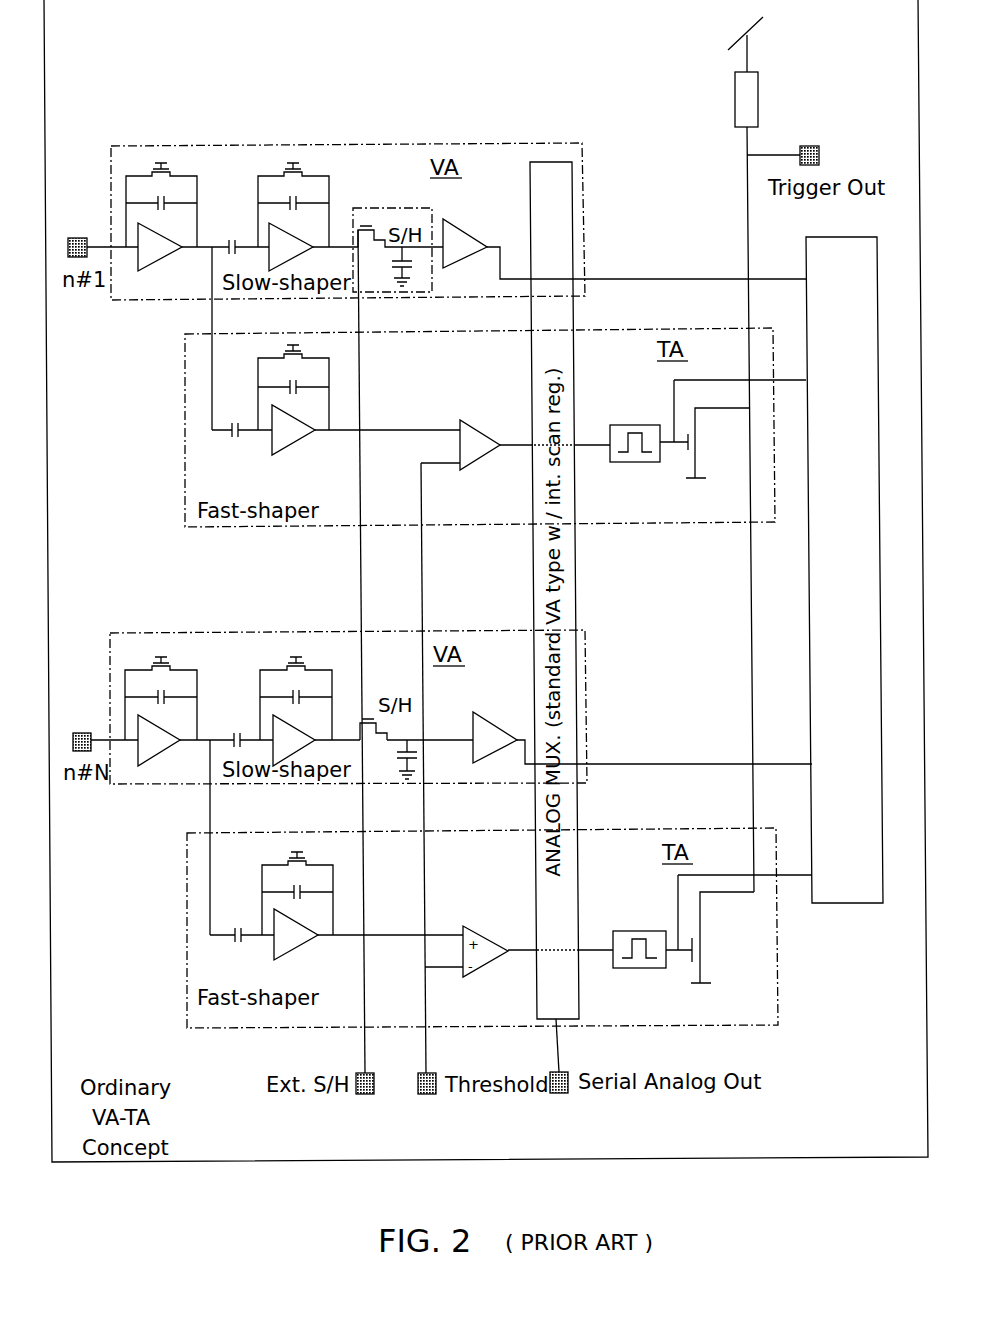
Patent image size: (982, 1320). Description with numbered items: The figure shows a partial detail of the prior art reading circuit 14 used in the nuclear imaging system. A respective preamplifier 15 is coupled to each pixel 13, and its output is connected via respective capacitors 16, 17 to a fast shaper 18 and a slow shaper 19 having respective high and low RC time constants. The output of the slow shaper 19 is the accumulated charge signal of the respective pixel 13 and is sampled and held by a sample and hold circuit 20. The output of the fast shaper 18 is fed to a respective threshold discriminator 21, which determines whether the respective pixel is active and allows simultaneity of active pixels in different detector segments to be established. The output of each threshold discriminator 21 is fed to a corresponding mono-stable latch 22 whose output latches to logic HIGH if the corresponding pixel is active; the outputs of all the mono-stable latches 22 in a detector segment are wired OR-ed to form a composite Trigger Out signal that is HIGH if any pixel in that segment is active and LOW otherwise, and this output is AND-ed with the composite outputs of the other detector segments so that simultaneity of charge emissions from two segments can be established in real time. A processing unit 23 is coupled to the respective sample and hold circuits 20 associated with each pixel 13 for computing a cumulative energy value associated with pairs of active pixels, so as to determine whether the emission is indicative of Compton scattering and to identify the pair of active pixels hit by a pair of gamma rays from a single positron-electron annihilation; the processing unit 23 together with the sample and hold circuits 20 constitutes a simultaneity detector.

The pixel 13 is at (76, 238).
The reading circuit 14 is at (822, 1160).
The preamplifier 15 is at (159, 263).
The capacitor 16 is at (232, 441).
The capacitor 17 is at (232, 239).
The fast shaper 18 is at (332, 460).
The slow shaper 19 is at (346, 197).
The sample and hold circuit 20 is at (388, 293).
The threshold discriminator 21 is at (462, 421).
The mono-stable latch 22 is at (614, 425).
The processing unit 23 is at (845, 905).